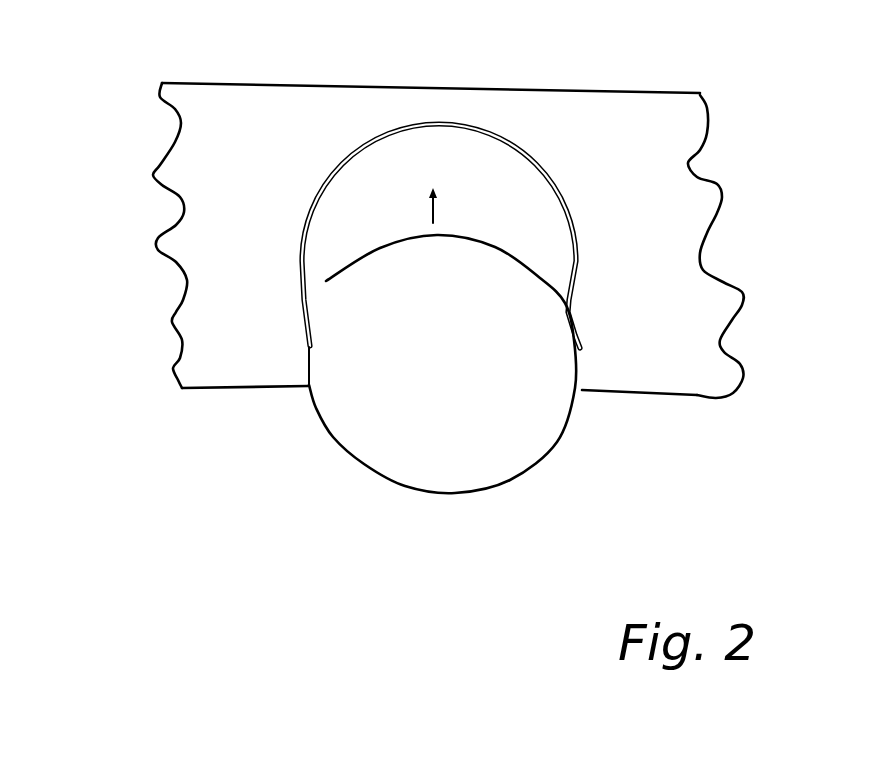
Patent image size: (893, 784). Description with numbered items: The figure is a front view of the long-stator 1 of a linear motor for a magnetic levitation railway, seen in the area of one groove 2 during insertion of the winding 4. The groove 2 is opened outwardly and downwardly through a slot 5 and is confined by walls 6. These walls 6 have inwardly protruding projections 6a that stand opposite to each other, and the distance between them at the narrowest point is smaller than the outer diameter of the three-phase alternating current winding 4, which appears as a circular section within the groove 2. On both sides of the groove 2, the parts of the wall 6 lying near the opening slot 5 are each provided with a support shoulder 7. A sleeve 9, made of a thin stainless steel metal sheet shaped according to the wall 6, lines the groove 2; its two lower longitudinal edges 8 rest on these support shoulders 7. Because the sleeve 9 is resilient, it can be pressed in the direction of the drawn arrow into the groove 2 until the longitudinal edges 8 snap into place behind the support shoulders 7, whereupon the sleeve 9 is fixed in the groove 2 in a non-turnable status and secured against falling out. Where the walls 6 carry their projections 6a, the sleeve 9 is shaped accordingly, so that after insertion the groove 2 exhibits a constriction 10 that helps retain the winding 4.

The long-stator 1 is at (630, 63).
The groove 2 is at (468, 170).
The three-phase alternating current winding 4 is at (537, 443).
The slot 5 is at (309, 385).
The wall 6 is at (582, 265).
The projection 6a is at (575, 305).
The support shoulder 7 is at (580, 350).
The longitudinal edge 8 is at (307, 322).
The sleeve 9 is at (340, 167).
The constriction 10 is at (318, 289).